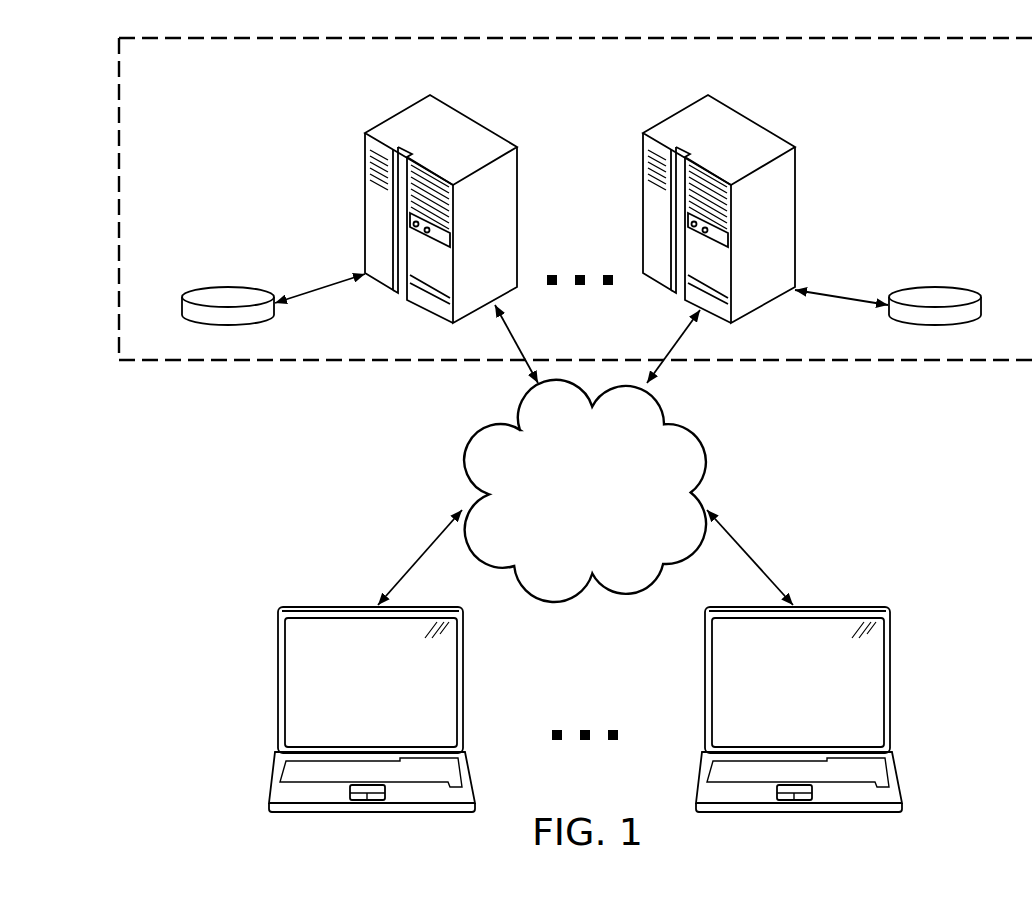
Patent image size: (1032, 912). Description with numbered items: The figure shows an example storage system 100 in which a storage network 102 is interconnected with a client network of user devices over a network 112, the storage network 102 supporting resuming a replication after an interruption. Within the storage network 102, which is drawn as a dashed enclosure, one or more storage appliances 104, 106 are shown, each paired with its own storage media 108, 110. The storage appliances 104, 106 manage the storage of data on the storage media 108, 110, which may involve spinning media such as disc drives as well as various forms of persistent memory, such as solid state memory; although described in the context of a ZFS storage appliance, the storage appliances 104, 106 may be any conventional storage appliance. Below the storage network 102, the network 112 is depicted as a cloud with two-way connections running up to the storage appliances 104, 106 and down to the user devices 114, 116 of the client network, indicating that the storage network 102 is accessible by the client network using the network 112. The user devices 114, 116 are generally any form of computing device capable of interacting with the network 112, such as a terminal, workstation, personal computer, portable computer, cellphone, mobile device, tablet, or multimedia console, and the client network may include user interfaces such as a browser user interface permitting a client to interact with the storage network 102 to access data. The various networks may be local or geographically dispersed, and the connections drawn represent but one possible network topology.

The storage system 100 is at (140, 465).
The storage network 102 is at (597, 101).
The storage appliance 104 is at (365, 213).
The storage appliance 106 is at (795, 213).
The storage media 108 is at (226, 287).
The storage media 110 is at (936, 287).
The network 112 is at (566, 517).
The user device 114 is at (278, 705).
The user device 116 is at (890, 693).